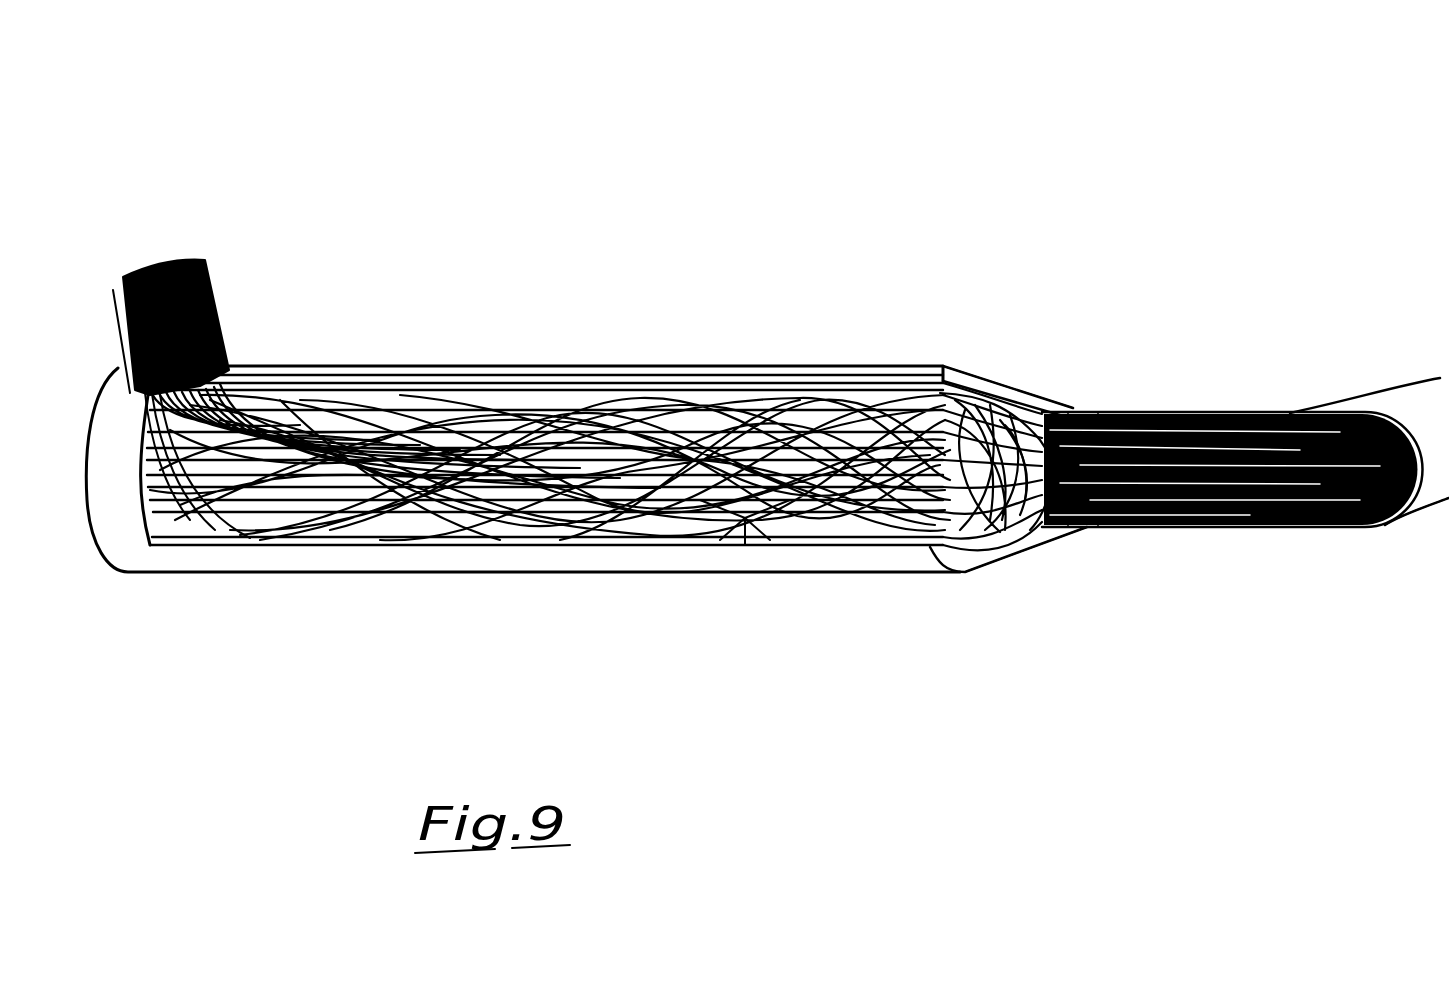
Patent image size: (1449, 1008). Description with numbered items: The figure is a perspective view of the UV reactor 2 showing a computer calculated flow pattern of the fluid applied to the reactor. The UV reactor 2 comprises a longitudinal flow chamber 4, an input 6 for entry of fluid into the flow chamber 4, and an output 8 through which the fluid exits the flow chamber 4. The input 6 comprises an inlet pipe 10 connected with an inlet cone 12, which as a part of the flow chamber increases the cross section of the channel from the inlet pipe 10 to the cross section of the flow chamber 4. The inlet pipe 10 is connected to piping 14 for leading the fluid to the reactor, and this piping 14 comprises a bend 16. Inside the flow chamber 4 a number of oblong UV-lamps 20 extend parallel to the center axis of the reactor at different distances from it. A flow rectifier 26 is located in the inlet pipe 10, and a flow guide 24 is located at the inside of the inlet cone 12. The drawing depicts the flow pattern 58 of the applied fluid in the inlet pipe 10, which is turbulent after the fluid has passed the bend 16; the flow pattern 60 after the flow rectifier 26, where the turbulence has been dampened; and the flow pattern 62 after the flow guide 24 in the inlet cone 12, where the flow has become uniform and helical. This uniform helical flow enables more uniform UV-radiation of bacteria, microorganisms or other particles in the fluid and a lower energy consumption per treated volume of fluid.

The UV reactor 2 is at (645, 155).
The longitudinal flow chamber 4 is at (640, 562).
The input 6 is at (1170, 198).
The output 8 is at (218, 326).
The inlet pipe 10 is at (1188, 527).
The inlet cone 12 is at (1005, 553).
The piping 14 is at (1363, 331).
The bend 16 is at (1425, 490).
The oblong UV-lamps 20 is at (605, 398).
The flow guide 24 is at (1012, 427).
The flow rectifier 26 is at (1102, 404).
The flow pattern for the applied fluid in the inlet pipe 58 is at (1250, 420).
The flow pattern for the applied fluid after the flow rectifier 60 is at (1076, 414).
The flow pattern for the applied fluid after the flow guide 62 is at (745, 515).